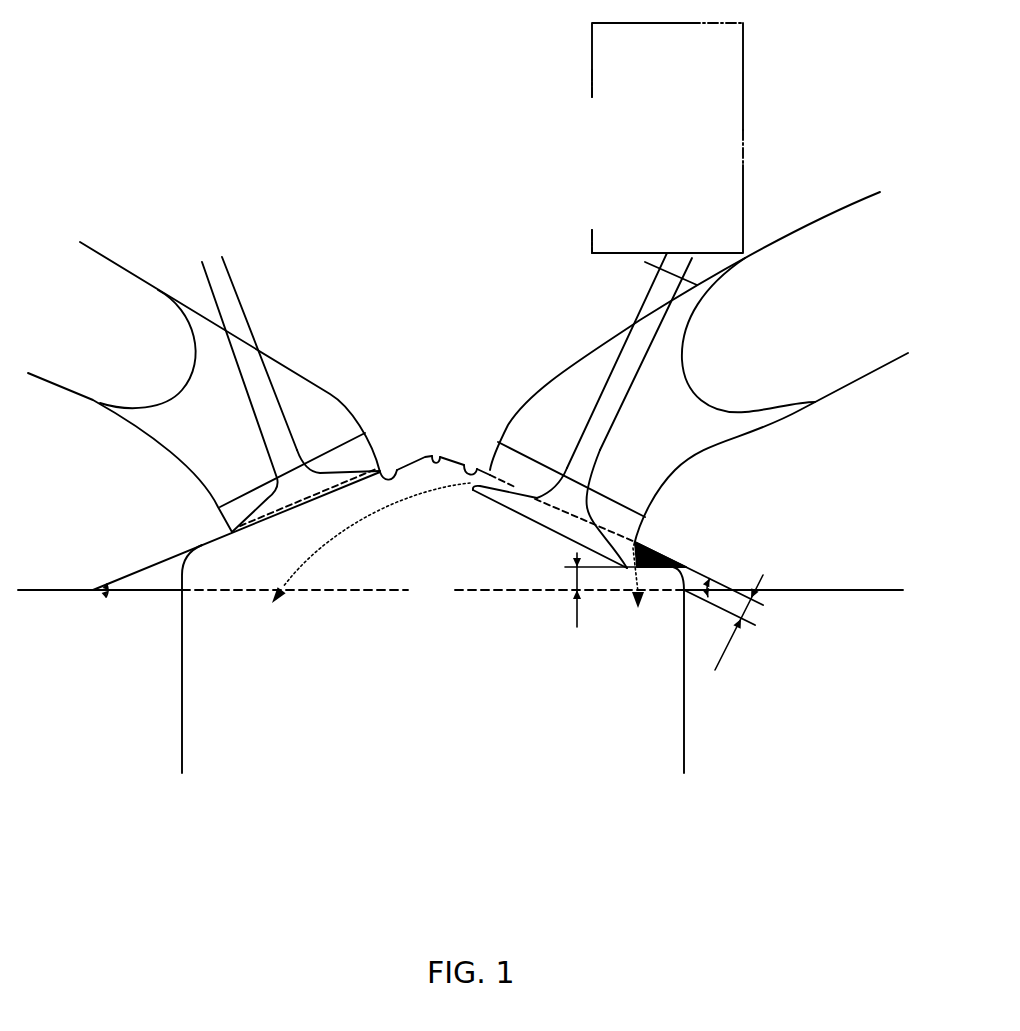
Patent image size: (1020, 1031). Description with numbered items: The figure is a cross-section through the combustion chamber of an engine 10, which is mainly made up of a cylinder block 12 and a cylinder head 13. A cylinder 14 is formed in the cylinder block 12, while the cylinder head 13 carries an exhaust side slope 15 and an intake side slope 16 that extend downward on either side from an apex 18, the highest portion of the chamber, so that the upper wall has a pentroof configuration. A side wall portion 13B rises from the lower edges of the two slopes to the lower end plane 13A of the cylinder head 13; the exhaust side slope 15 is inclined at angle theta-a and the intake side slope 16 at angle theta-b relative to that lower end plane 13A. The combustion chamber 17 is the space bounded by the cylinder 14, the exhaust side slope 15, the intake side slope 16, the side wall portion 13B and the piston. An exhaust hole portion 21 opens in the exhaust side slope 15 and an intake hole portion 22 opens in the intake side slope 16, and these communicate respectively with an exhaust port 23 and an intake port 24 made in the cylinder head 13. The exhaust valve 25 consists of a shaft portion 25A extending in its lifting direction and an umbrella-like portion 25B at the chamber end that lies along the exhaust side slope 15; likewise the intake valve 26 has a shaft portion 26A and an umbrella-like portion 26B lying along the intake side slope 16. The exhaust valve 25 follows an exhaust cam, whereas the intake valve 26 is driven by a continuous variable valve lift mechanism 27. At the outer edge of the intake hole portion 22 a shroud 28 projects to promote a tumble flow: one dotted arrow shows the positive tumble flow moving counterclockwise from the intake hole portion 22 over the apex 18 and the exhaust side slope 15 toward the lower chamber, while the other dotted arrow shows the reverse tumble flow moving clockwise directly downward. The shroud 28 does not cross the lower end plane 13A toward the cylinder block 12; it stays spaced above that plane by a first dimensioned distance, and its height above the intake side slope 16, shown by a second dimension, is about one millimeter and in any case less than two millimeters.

The engine 10 is at (303, 58).
The cylinder block 12 is at (210, 699).
The cylinder head 13 is at (428, 505).
The lower end plane of the cylinder head 13A is at (808, 590).
The side wall portion 13B is at (184, 570).
The cylinder 14 is at (683, 731).
The exhaust side slope 15 is at (397, 467).
The intake side slope 16 is at (469, 465).
The combustion chamber 17 is at (446, 602).
The apex 18 is at (431, 455).
The exhaust hole portion 21 is at (268, 523).
The intake hole portion 22 is at (540, 503).
The exhaust port 23 is at (103, 395).
The intake port 24 is at (789, 405).
The exhaust valve 25 is at (276, 392).
The shaft portion of the exhaust valve 25A is at (228, 302).
The umbrella-like portion of the exhaust valve 25B is at (347, 476).
The intake valve 26 is at (588, 410).
The shaft portion of the intake valve 26A is at (610, 418).
The umbrella-like portion of the intake valve 26B is at (515, 495).
The continuous variable valve lift mechanism 27 is at (743, 132).
The shroud 28 is at (655, 548).